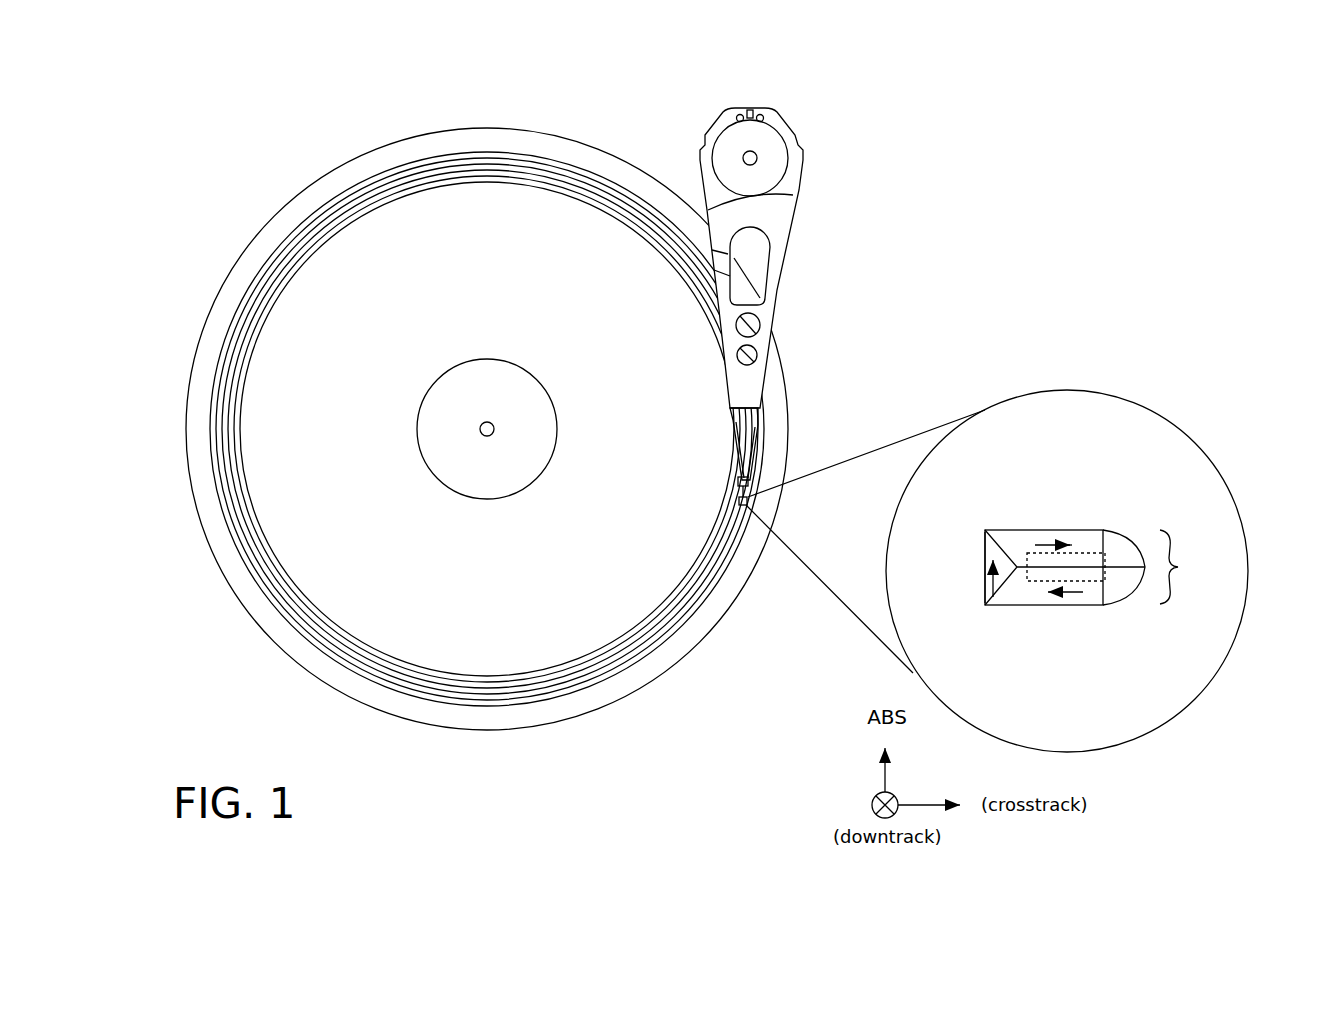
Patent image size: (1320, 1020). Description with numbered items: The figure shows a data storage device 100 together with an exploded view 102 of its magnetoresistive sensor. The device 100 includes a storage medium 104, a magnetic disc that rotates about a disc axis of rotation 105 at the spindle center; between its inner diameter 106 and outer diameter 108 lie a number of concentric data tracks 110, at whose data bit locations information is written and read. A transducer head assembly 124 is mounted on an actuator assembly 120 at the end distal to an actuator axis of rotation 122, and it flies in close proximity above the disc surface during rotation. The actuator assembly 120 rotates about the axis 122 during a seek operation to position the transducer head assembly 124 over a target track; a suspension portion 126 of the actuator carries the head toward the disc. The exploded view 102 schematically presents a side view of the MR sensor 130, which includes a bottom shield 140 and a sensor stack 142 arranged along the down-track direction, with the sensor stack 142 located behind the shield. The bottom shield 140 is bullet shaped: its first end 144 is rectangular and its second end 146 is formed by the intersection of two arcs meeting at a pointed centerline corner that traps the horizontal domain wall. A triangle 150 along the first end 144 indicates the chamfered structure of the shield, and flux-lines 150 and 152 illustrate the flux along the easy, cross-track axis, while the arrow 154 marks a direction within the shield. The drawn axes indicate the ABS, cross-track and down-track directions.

The data storage device 100 is at (248, 105).
The exploded view 102 is at (1066, 390).
The storage medium 104 is at (553, 137).
The disc axis of rotation 105 is at (481, 426).
The inner diameter 106 is at (483, 426).
The outer diameter 108 is at (378, 176).
The data tracks 110 is at (642, 642).
The actuator assembly 120 is at (808, 235).
The actuator axis of rotation 122 is at (758, 152).
The transducer head assembly 124 is at (752, 515).
The suspension 126 is at (735, 432).
The MR sensor 130 is at (1082, 440).
The bottom shield 140 is at (1067, 530).
The sensor stack 142 is at (1090, 583).
The first end 144 is at (985, 542).
The second end 146 is at (1205, 580).
The triangle 150 is at (1090, 525).
The flux-line 152 is at (1060, 607).
The crosstrack direction 154 is at (973, 571).